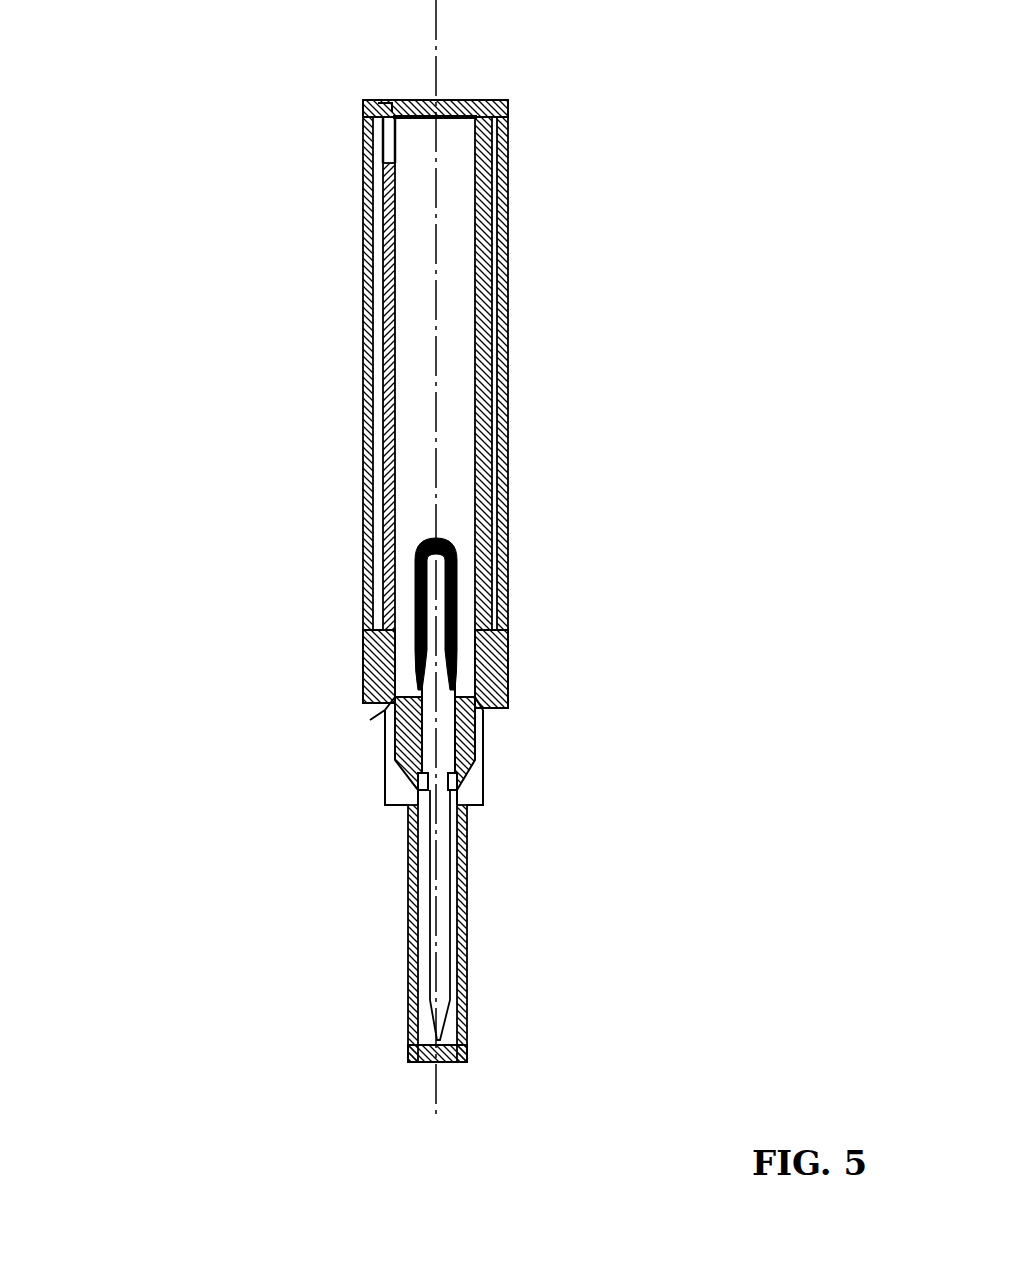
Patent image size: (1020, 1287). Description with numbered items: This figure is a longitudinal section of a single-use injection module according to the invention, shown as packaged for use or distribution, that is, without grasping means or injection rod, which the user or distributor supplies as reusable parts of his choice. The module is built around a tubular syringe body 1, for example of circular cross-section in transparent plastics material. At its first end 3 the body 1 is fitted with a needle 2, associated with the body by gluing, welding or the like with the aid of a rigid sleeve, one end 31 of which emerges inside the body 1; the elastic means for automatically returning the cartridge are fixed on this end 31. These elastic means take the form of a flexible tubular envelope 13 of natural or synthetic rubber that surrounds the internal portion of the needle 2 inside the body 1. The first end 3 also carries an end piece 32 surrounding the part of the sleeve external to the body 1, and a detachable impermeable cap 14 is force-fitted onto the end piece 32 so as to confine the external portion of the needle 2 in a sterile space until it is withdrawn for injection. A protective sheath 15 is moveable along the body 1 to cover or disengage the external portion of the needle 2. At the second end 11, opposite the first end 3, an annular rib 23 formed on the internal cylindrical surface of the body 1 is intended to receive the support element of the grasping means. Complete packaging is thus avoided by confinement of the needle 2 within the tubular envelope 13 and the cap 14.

The syringe body 1 is at (508, 249).
The needle 2 is at (467, 903).
The first end 3 is at (362, 740).
The second end 11 is at (483, 92).
The flexible tubular envelope 13 is at (447, 543).
The cap 14 is at (483, 782).
The protective sheath 15 is at (508, 170).
The annular rib 23 is at (388, 97).
The end of sleeve 31 is at (385, 733).
The end piece 32 is at (485, 735).